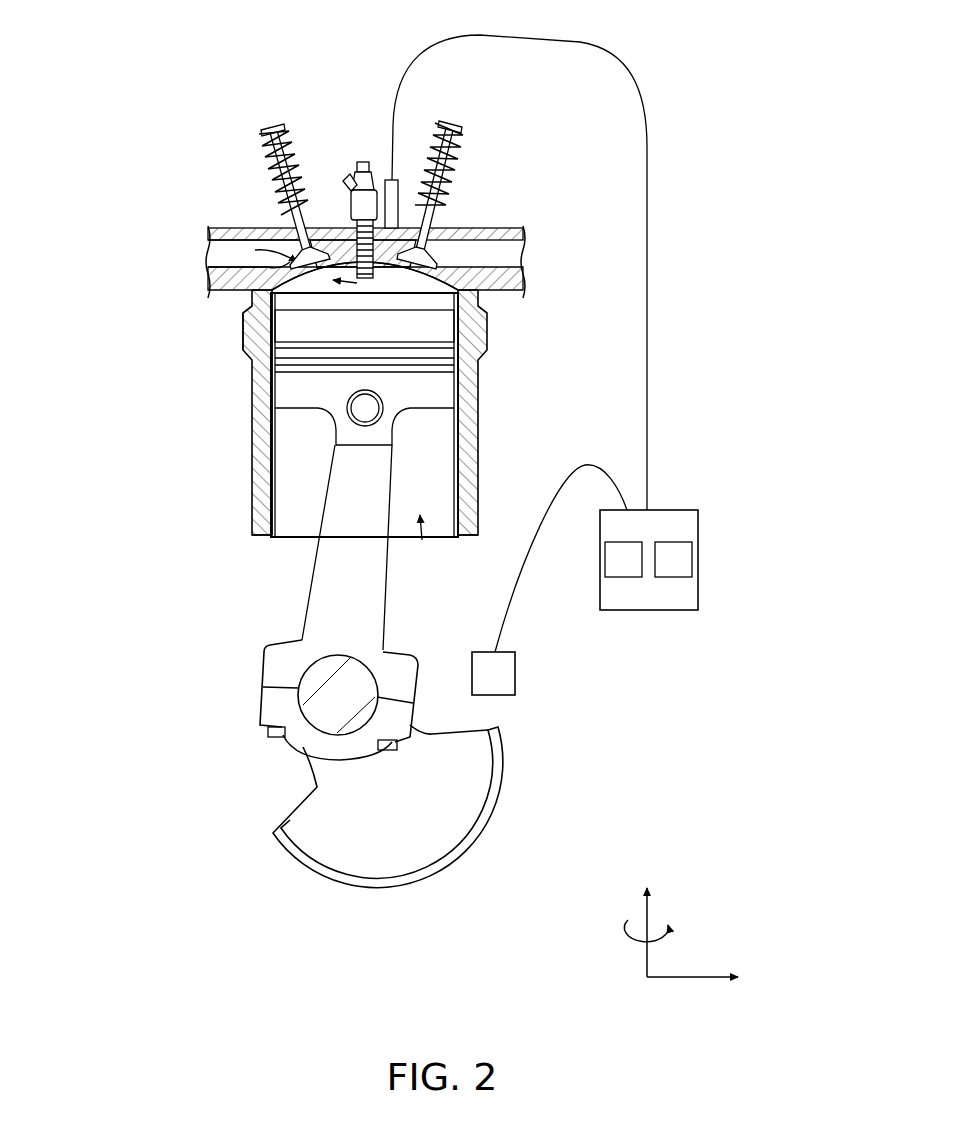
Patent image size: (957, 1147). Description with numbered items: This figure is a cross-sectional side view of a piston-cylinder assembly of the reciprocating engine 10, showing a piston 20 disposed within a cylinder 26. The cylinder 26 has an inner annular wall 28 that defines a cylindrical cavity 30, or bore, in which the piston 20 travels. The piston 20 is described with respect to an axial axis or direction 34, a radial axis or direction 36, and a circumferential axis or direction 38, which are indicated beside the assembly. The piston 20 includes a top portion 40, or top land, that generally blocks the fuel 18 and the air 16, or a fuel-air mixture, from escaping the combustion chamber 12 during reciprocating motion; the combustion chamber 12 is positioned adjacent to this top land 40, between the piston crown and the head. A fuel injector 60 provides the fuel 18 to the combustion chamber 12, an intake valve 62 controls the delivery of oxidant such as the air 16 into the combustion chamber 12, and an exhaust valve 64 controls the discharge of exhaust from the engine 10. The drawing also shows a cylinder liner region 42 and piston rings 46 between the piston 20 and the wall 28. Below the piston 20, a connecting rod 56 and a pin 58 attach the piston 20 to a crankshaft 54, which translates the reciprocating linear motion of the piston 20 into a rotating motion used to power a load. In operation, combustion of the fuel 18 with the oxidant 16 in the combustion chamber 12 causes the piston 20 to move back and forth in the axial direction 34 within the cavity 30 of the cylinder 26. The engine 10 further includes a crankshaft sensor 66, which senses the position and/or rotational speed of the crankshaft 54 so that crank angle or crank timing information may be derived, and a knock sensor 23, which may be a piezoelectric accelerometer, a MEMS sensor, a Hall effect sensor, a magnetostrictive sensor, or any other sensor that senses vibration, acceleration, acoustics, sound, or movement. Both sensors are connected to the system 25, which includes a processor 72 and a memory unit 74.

The reciprocating engine 10 is at (530, 156).
The combustion chamber 12 is at (405, 286).
The air 16 is at (262, 262).
The fuel 18 is at (361, 150).
The piston 20 is at (435, 401).
The knock sensor 23 is at (392, 182).
The system 25 is at (670, 510).
The cylinder 26 is at (251, 402).
The inner annular wall 28 is at (268, 479).
The cylindrical cavity 30 is at (282, 516).
The axial axis or direction 34 is at (642, 908).
The radial axis or direction 36 is at (680, 980).
The circumferential axis or direction 38 is at (672, 928).
The top portion 40 is at (430, 328).
The cylinder liner 42 is at (253, 338).
The piston rings 46 is at (462, 373).
The crankshaft 54 is at (317, 833).
The connecting rod 56 is at (365, 635).
The pin 58 is at (365, 416).
The fuel injector 60 is at (366, 162).
The intake valve 62 is at (272, 128).
The exhaust valve 64 is at (455, 126).
The crankshaft sensor 66 is at (516, 673).
The processor 72 is at (620, 582).
The memory unit 74 is at (668, 582).